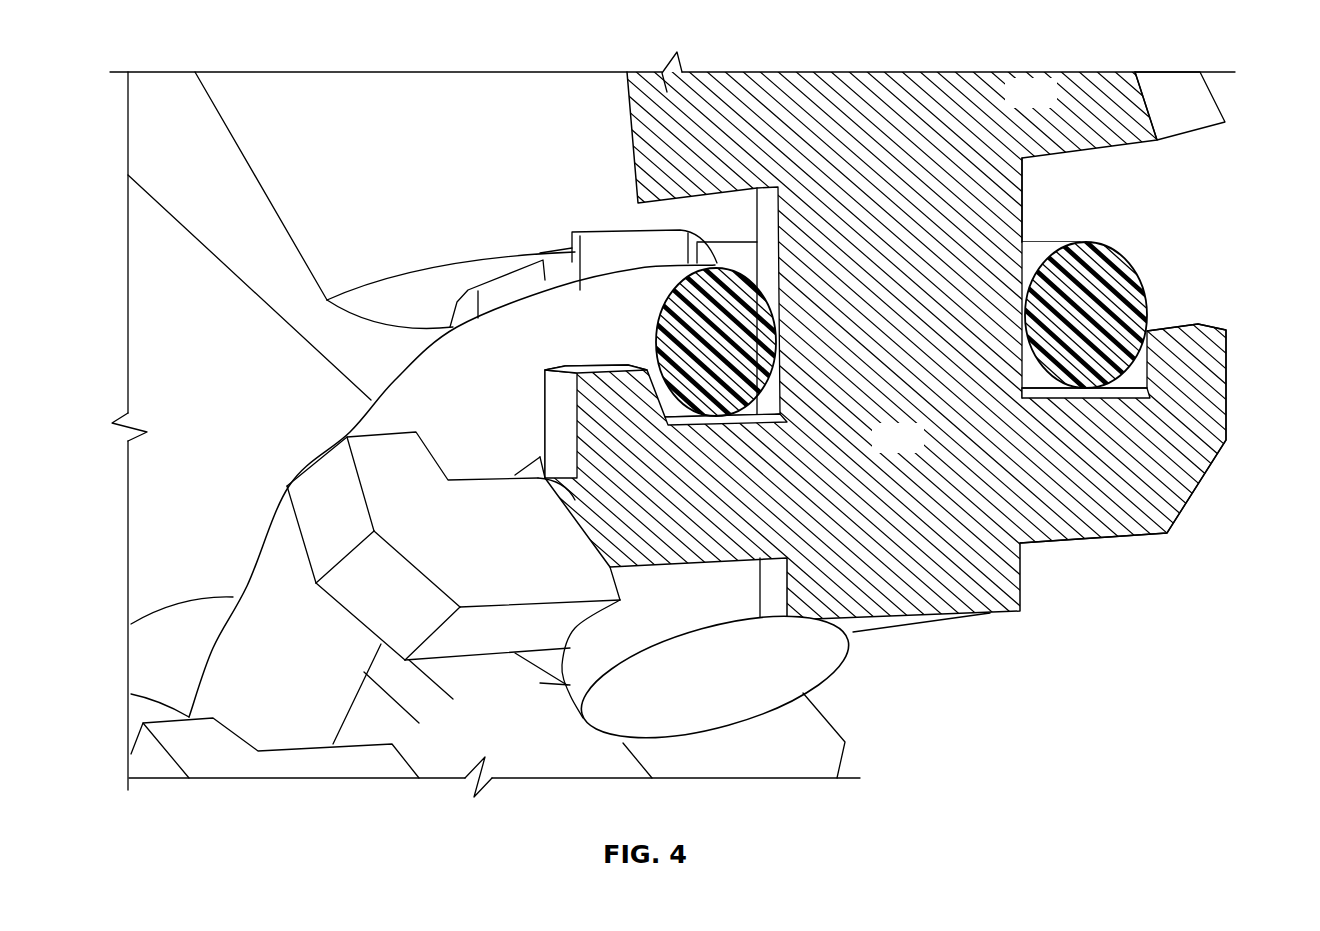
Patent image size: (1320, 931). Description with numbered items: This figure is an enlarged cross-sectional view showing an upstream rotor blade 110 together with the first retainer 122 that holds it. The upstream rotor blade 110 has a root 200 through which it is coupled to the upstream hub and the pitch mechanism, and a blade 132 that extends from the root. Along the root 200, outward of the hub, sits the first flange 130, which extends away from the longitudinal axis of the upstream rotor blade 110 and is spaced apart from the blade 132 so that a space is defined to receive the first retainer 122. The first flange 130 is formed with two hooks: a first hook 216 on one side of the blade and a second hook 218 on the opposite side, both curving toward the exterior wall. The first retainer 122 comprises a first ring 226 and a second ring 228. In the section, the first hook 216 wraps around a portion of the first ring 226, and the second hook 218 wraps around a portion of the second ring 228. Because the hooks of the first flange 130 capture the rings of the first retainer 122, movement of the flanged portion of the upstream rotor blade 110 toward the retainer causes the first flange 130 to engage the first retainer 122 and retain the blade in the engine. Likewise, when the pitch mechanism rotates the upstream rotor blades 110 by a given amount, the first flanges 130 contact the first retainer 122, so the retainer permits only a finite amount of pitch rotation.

The upstream rotor blade 110 is at (1089, 96).
The blade 132 is at (1049, 105).
The first retainer 122 is at (1080, 212).
The second ring 228 is at (1130, 297).
The second hook 218 is at (1215, 370).
The first ring 226 is at (453, 373).
The first hook 216 is at (617, 387).
The first flange 130 is at (520, 538).
The root 200 is at (916, 450).